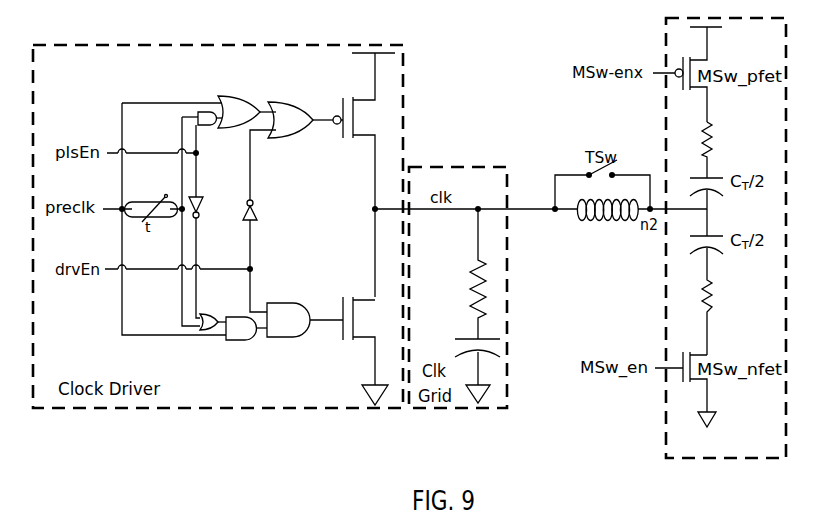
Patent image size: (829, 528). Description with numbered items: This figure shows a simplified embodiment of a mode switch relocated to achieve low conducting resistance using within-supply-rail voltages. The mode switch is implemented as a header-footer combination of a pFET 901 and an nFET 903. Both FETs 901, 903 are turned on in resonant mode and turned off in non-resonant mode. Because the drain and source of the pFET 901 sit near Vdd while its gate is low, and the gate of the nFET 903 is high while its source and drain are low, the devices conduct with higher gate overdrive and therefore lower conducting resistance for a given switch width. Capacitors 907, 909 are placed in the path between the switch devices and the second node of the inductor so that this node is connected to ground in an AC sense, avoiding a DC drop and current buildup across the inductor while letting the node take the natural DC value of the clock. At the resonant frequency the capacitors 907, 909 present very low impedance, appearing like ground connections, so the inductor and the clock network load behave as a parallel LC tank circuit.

The pFET 901 is at (683, 62).
The nFET 903 is at (683, 358).
The capacitor 907 is at (715, 176).
The capacitor 909 is at (713, 250).